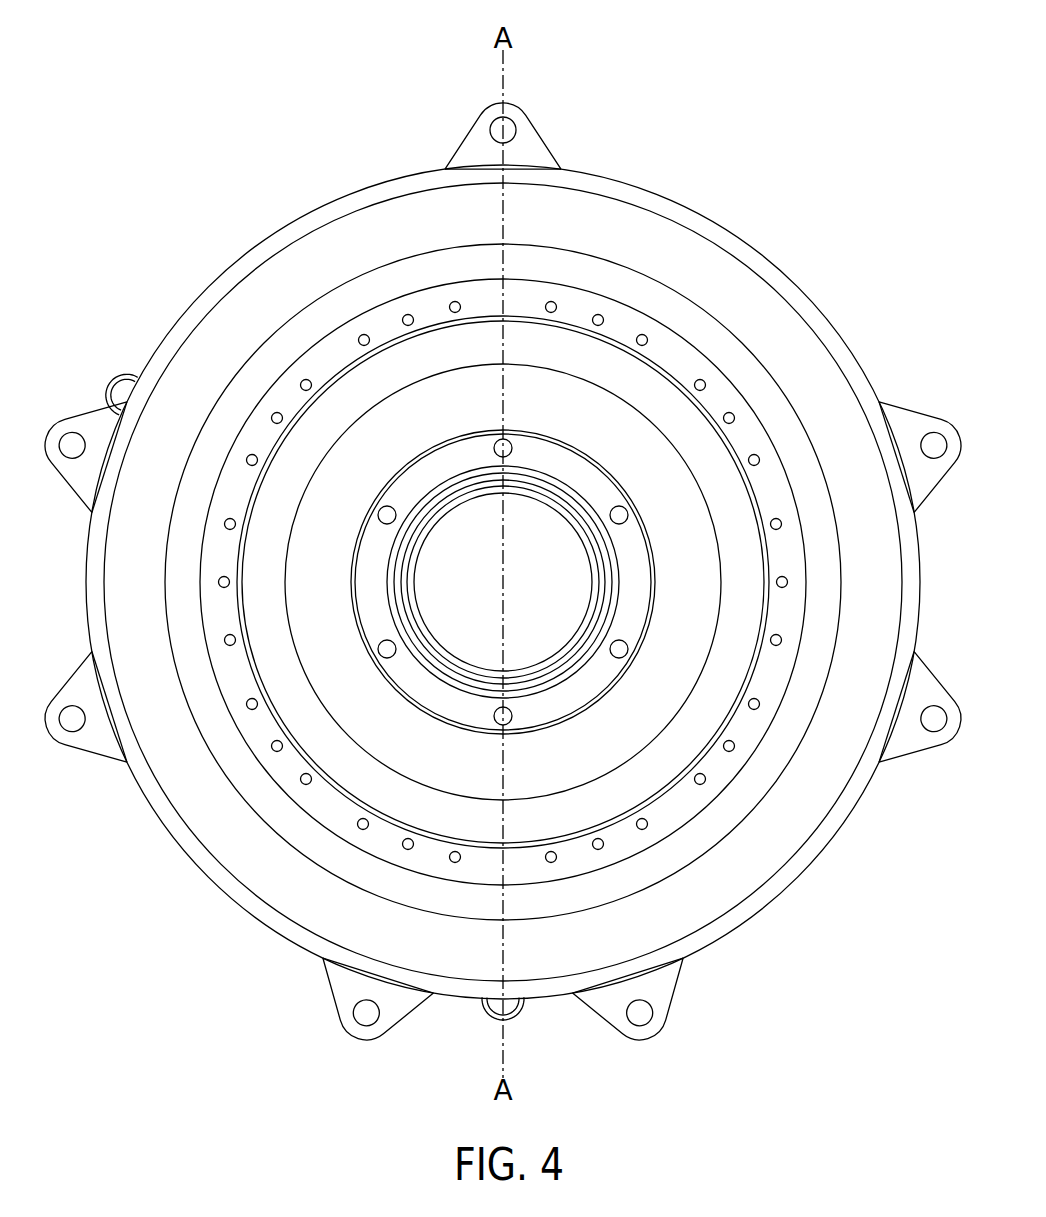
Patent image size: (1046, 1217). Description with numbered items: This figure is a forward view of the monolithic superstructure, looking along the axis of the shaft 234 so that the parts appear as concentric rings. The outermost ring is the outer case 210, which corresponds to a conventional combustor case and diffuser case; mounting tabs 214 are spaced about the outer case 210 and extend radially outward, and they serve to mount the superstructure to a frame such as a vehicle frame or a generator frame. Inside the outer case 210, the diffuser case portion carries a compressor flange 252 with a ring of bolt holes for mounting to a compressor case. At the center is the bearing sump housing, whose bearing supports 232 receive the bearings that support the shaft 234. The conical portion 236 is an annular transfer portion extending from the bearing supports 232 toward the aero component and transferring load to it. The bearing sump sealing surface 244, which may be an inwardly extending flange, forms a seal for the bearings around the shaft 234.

The outer case 210 is at (314, 203).
The mounting tabs 214 is at (478, 140).
The bearing supports 232 is at (425, 474).
The shaft 234 is at (443, 602).
The conical portion 236 is at (268, 510).
The bearing sump sealing surface 244 is at (560, 660).
The compressor flange 252 is at (338, 815).